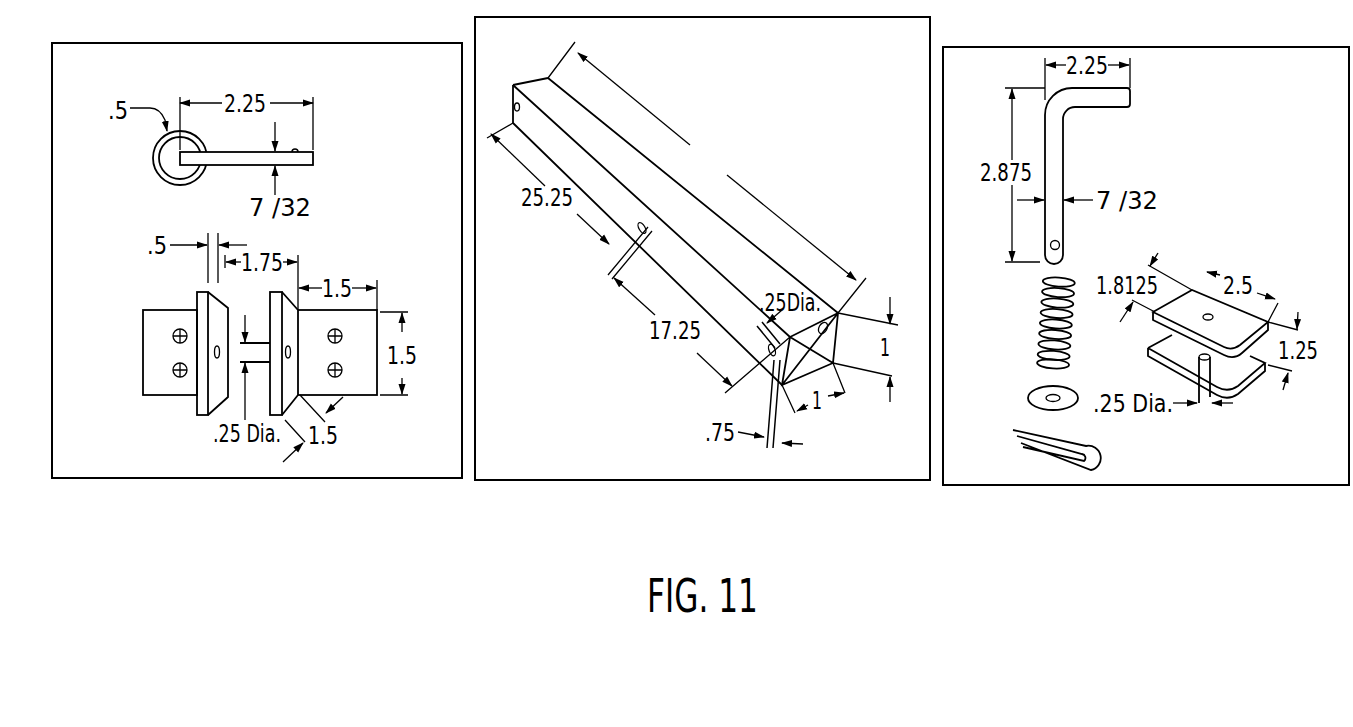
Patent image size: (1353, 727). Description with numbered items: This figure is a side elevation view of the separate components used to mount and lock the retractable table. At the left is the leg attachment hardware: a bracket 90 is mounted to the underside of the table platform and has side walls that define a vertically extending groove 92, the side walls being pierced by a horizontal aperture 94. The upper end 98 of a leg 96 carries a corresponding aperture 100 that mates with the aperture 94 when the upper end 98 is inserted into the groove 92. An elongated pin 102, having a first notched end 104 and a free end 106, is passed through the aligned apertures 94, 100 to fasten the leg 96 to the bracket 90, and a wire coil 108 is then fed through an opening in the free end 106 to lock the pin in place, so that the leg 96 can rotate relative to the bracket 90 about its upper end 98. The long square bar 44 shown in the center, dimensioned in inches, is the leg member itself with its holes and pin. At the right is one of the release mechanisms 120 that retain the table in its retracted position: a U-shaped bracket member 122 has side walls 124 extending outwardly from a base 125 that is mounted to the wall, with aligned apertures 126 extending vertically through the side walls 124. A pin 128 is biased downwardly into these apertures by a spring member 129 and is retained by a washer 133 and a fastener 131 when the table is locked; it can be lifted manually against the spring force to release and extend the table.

The overall length of square tube 44 is at (707, 177).
The bracket 90 is at (383, 323).
The groove 92 is at (285, 292).
The aperture 94 is at (293, 348).
The leg 96 is at (656, 168).
The upper end 98 is at (527, 70).
The aperture 100 is at (512, 101).
The elongated pin 102 is at (228, 148).
The first notched end 104 is at (316, 150).
The free end 106 is at (191, 181).
The wire coil 108 is at (153, 156).
The release mechanism 120 is at (1209, 45).
The U-shaped bracket member 122 is at (1256, 360).
The side wall 124 is at (1265, 367).
The base 125 is at (1245, 328).
The aligned aperture 126 is at (1207, 313).
The pin 128 is at (1064, 145).
The spring member 129 is at (1040, 312).
The fastener 131 is at (1101, 462).
The washer 133 is at (1028, 397).